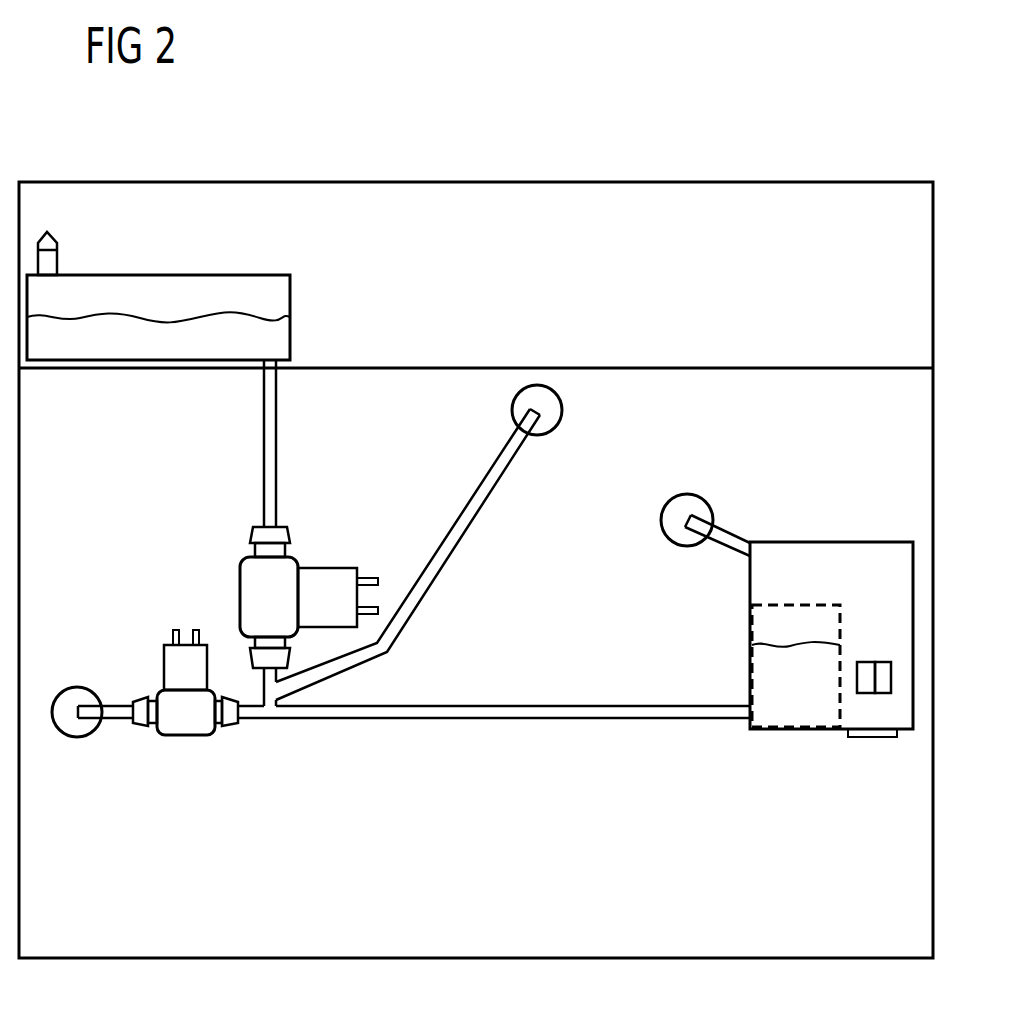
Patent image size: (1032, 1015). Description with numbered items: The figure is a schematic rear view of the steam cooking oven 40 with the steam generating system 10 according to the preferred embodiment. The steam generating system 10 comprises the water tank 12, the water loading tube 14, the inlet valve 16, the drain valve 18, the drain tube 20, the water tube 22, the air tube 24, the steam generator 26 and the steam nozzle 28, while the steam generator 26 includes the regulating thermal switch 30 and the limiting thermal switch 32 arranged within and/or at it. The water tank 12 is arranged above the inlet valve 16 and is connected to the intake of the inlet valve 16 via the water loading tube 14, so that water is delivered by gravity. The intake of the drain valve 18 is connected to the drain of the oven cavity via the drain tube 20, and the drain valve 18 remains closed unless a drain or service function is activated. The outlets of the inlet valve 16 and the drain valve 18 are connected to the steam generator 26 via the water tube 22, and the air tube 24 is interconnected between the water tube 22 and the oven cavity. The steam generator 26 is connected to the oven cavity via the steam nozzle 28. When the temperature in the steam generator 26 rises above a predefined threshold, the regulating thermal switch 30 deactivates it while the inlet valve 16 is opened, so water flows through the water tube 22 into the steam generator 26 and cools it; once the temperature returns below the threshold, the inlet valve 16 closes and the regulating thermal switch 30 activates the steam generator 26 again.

The steam generating system 10 is at (392, 784).
The water tank 12 is at (157, 288).
The water loading tube 14 is at (270, 440).
The inlet valve 16 is at (332, 577).
The drain valve 18 is at (185, 722).
The drain tube 20 is at (113, 718).
The water tube 22 is at (552, 712).
The air tube 24 is at (470, 513).
The steam generator 26 is at (830, 555).
The steam nozzle 28 is at (732, 540).
The regulating thermal switch 30 is at (863, 695).
The limiting thermal switch 32 is at (883, 695).
The steam cooking oven 40 is at (510, 182).